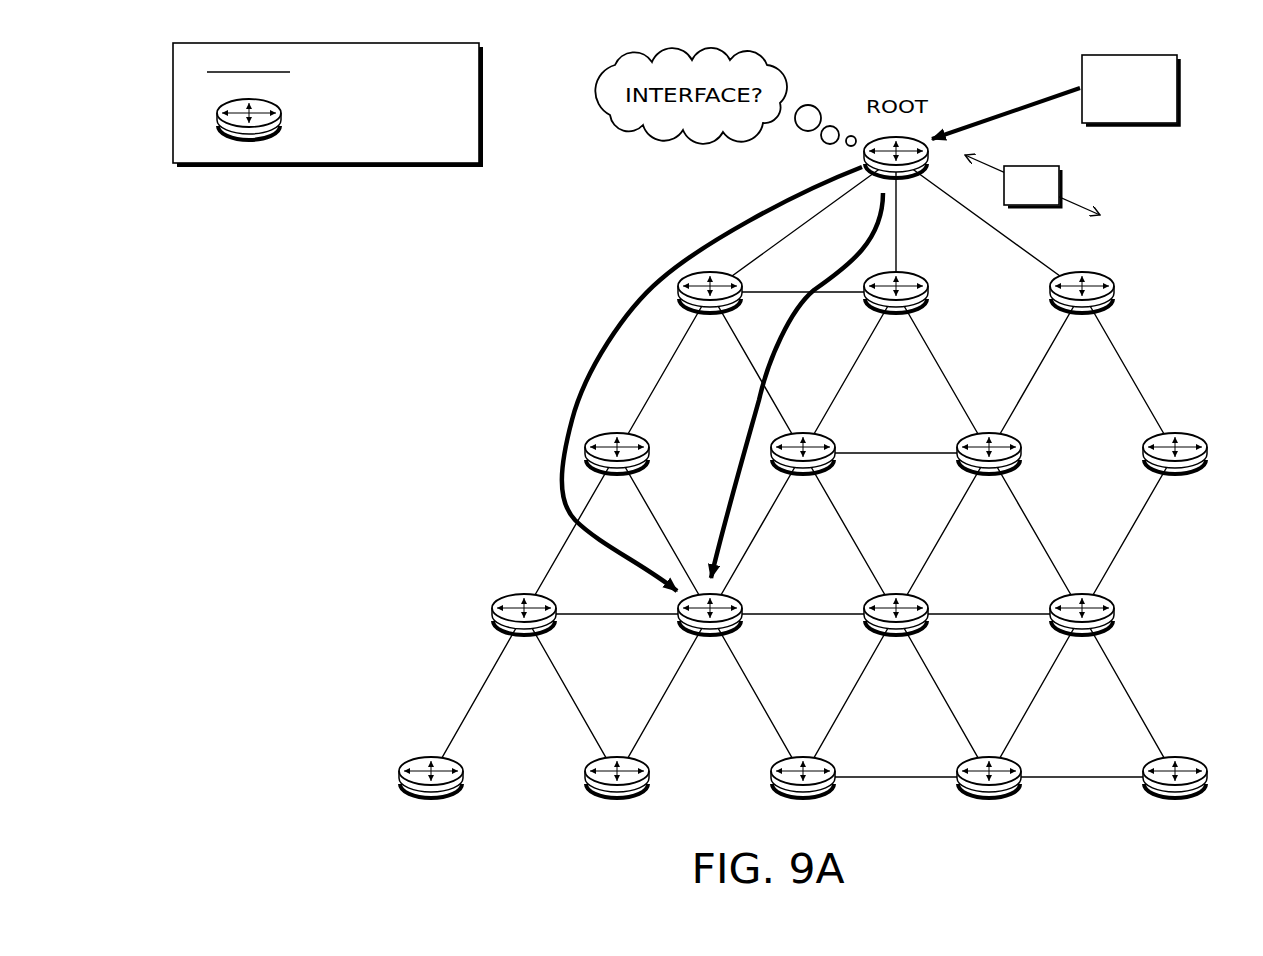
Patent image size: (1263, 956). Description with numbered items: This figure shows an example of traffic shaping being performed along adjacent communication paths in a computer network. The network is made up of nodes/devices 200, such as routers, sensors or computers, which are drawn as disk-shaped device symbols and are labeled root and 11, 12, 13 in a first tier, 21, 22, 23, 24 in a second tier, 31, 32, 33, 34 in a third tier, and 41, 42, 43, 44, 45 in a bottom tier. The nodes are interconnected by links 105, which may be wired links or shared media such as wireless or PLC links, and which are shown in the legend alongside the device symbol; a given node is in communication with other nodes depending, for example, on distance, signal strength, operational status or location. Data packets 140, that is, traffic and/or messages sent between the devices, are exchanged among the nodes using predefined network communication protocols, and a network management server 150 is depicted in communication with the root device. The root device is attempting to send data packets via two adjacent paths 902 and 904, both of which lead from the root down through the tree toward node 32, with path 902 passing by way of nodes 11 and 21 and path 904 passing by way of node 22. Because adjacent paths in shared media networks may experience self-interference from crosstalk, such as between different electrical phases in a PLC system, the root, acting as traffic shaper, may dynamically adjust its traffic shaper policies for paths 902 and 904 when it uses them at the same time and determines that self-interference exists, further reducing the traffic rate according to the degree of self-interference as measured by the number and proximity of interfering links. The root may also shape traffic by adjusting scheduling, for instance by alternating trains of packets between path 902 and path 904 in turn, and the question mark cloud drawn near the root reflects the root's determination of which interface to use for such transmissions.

The links 105 is at (320, 72).
The nodes/devices 200 is at (332, 119).
The network management server (NMS) 150 is at (1055, 97).
The data packets 140 is at (1032, 185).
The adjacent path 902 is at (603, 354).
The adjacent path 904 is at (745, 436).
The node 11 is at (710, 311).
The node 12 is at (896, 311).
The node 13 is at (1082, 311).
The node 21 is at (617, 471).
The node 22 is at (803, 471).
The node 23 is at (989, 471).
The node 24 is at (1175, 471).
The node 31 is at (524, 632).
The node 32 is at (710, 632).
The node 33 is at (896, 632).
The node 34 is at (1082, 632).
The node 41 is at (431, 794).
The node 42 is at (617, 794).
The node 43 is at (803, 794).
The node 44 is at (989, 794).
The node 45 is at (1175, 794).